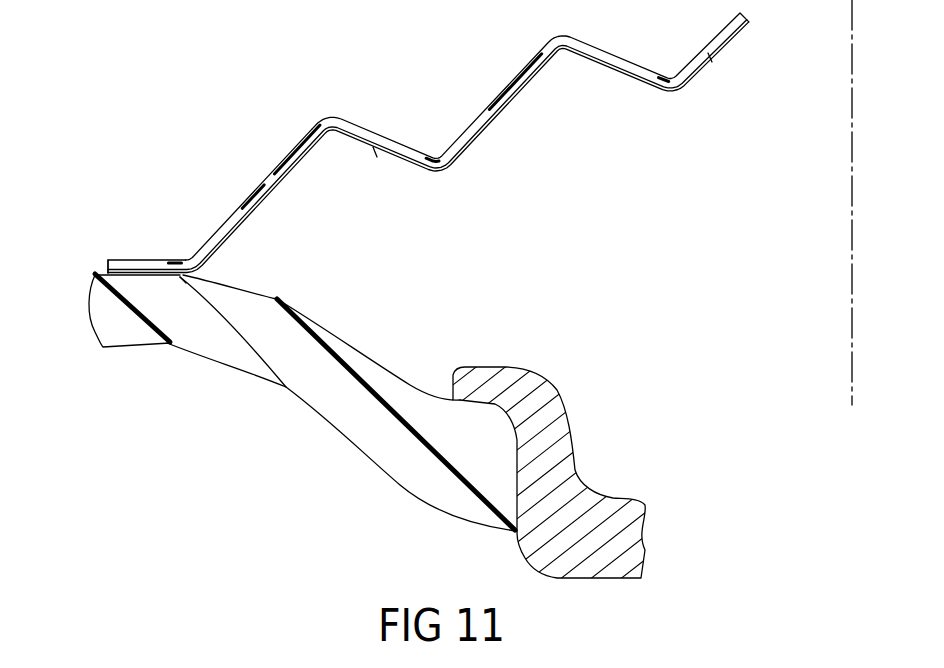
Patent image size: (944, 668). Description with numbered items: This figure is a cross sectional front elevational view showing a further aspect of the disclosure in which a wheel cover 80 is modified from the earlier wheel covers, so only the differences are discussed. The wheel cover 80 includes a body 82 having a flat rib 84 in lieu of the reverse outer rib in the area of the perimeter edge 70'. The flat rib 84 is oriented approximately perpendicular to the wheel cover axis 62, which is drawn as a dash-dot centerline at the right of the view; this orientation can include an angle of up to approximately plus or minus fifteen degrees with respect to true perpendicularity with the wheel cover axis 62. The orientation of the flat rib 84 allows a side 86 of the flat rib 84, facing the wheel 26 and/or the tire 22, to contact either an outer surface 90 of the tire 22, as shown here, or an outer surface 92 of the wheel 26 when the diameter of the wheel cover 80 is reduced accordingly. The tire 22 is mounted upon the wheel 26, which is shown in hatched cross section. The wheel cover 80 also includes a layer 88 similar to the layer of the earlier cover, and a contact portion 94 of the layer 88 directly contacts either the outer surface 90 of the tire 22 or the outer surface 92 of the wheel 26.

The wheel cover 80 is at (432, 100).
The body 82 is at (231, 218).
The flat rib 84 is at (165, 259).
The layer 88 is at (260, 204).
The perimeter edge 70' is at (144, 250).
The outer surface of tire 90 is at (90, 258).
The tire 22 is at (98, 313).
The contact portion 94 is at (133, 274).
The side of flat rib 86 is at (152, 292).
The outer surface of wheel 92 is at (570, 378).
The wheel 26 is at (567, 473).
The wheel cover central axis 62 is at (851, 157).